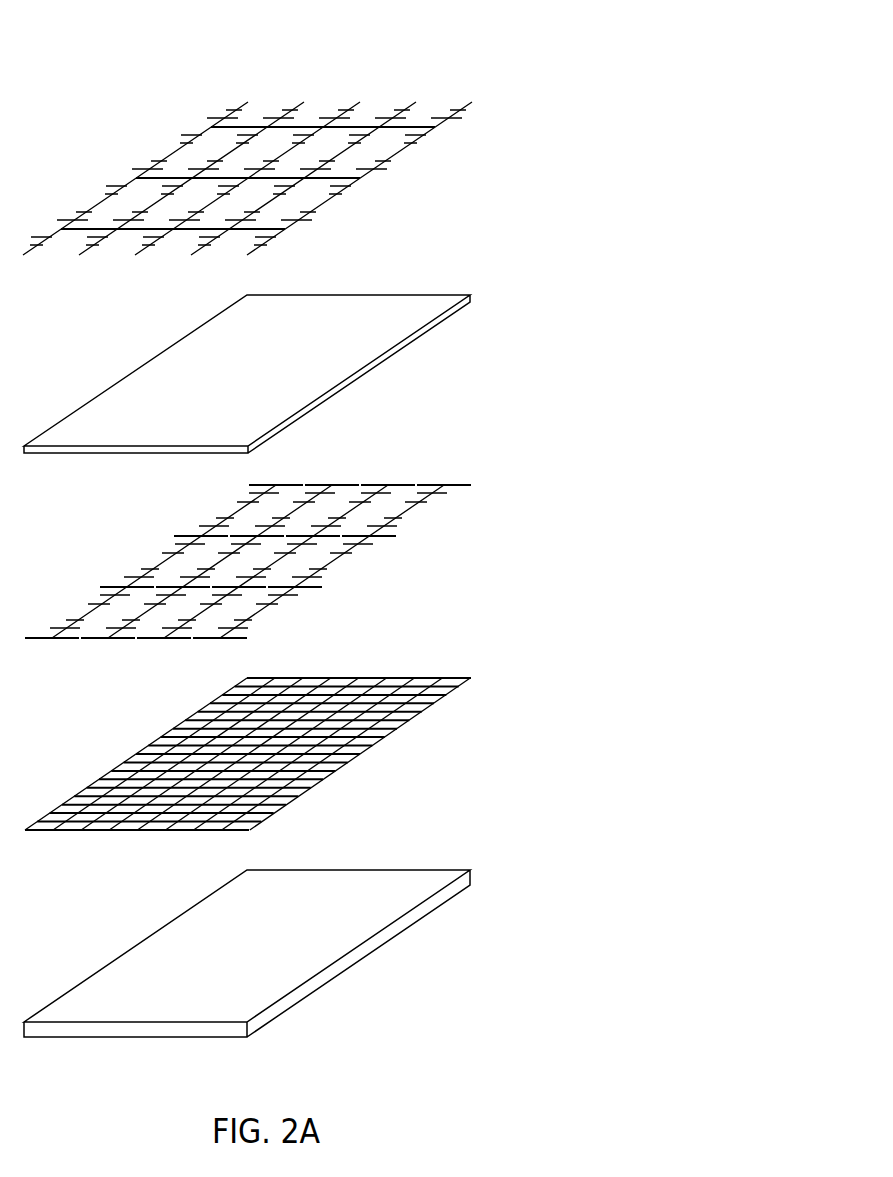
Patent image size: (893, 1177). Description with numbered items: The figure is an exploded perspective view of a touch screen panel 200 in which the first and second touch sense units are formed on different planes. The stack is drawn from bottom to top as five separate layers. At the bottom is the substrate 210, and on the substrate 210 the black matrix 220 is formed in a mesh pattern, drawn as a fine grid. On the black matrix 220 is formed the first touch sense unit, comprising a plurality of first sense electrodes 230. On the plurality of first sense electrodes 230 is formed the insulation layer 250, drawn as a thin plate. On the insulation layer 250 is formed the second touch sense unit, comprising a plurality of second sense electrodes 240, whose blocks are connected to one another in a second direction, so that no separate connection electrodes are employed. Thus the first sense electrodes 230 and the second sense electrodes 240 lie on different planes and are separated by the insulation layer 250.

The touch screen panel 200 is at (568, 29).
The substrate 210 is at (470, 870).
The black matrix 220 is at (470, 677).
The first sense electrodes 230 is at (498, 484).
The second sense electrodes 240 is at (487, 100).
The insulation layer 250 is at (470, 294).